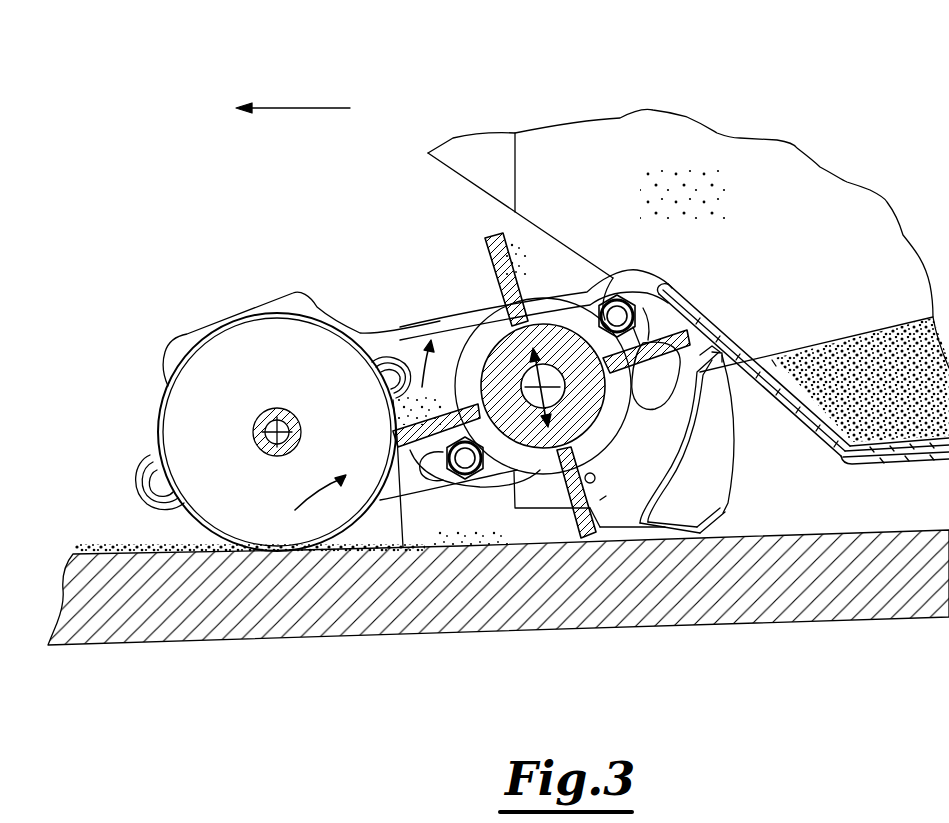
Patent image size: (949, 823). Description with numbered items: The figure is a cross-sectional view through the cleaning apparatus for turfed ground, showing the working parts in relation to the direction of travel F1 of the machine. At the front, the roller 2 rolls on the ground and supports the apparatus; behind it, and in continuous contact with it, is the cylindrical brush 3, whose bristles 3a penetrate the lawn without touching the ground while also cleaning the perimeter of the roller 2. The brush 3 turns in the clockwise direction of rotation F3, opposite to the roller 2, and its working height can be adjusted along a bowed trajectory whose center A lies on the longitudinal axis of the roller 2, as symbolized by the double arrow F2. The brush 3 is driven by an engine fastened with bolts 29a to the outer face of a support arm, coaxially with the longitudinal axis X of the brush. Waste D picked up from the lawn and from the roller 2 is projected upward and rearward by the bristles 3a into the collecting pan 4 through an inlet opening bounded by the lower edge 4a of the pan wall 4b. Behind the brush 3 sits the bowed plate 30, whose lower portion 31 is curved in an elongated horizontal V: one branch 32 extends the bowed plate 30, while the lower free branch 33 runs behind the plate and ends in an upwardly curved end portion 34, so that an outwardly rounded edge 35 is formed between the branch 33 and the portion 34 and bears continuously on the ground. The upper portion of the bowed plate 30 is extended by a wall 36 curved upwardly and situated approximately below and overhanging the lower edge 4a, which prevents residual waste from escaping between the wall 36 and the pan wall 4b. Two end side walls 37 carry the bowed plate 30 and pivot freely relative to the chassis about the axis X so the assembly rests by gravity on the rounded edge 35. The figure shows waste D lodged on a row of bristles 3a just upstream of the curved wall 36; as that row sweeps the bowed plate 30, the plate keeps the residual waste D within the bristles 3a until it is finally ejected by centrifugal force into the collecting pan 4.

The front roller 2 is at (318, 335).
The cylindrical brush 3 is at (494, 234).
The bristles 3a is at (492, 252).
The collecting pan 4 is at (801, 414).
The lower edge of inlet opening 4a is at (710, 343).
The wall of the pan 4b is at (795, 372).
The bolts 29a is at (620, 292).
The bowed plate 30 is at (697, 420).
The lower portion 31 is at (607, 500).
The branch wall 32 is at (655, 487).
The lower free branch 33 is at (667, 530).
The upwardly curved end portion 34 is at (723, 523).
The rounded edge 35 is at (662, 539).
The curved wall 36 is at (732, 345).
The end side walls 37 is at (611, 495).
The center of bowed trajectory A is at (283, 420).
The waste D is at (698, 183).
The direction of travel F1 is at (297, 108).
The double arrow of height adjustment F2 is at (540, 430).
The direction of rotation of the brush F3 is at (402, 340).
The longitudinal axis of the brush X is at (535, 400).